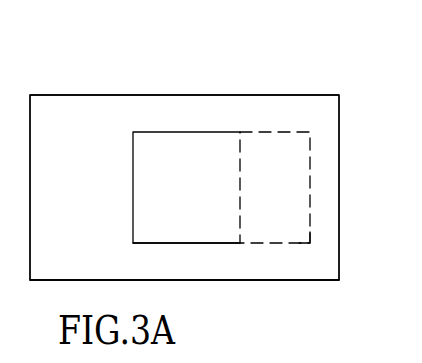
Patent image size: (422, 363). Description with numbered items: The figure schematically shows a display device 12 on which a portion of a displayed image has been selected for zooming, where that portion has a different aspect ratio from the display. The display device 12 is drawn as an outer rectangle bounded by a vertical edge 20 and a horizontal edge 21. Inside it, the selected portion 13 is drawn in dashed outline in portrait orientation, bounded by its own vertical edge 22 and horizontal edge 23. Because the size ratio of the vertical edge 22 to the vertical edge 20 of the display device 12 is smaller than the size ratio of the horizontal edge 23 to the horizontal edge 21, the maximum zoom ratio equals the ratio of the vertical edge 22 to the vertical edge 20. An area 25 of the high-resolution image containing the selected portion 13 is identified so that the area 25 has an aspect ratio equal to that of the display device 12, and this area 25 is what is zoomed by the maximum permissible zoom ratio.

The display device 12 is at (214, 86).
The selected portion 13 is at (313, 235).
The vertical edge 20 is at (332, 196).
The horizontal edge 21 is at (306, 283).
The vertical edge 22 is at (311, 158).
The horizontal edge 23 is at (246, 243).
The area 25 is at (133, 179).